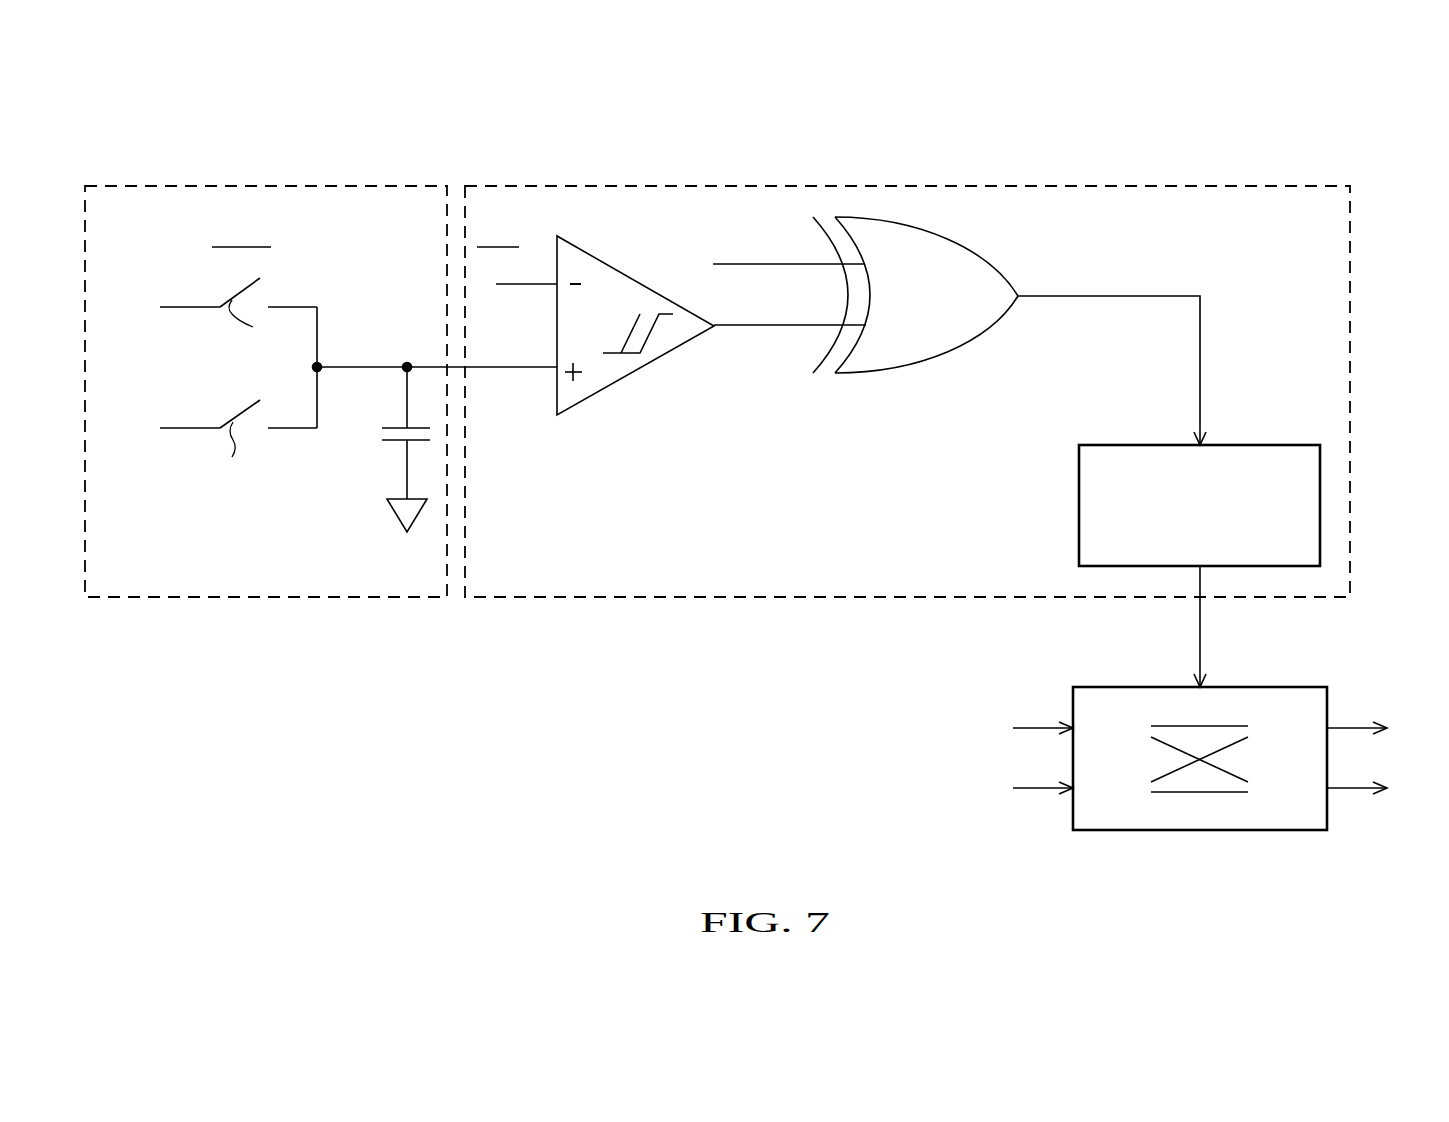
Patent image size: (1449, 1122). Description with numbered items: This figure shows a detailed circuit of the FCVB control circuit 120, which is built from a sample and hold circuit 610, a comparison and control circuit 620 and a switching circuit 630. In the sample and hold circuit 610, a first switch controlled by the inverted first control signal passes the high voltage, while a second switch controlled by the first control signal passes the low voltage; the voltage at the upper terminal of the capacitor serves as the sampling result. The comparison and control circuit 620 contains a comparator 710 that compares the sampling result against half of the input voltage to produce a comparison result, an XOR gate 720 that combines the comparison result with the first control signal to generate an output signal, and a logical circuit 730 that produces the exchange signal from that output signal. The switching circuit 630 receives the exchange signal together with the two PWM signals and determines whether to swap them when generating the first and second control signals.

The FCVB control circuit 120 is at (1346, 112).
The sample and hold circuit 610 is at (263, 186).
The comparison and control circuit 620 is at (915, 186).
The switching circuit 630 is at (1200, 830).
The comparator 710 is at (607, 388).
The XOR gate 720 is at (918, 365).
The logical circuit 730 is at (1266, 445).